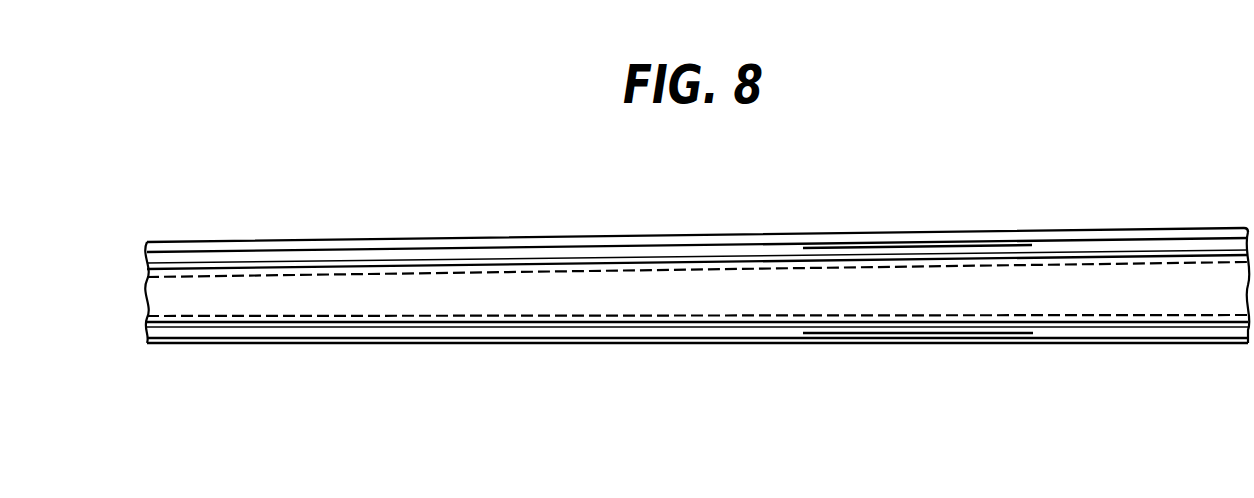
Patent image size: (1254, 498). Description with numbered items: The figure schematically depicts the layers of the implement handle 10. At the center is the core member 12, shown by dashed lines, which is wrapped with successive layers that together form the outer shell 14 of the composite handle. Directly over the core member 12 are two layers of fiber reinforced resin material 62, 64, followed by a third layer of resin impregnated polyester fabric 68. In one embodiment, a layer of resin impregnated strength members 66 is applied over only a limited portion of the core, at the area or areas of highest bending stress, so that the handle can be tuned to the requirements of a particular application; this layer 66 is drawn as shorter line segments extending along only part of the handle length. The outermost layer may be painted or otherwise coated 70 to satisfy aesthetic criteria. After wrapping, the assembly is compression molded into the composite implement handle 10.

The implement handle 10 is at (1170, 229).
The core member 12 is at (933, 285).
The outer shell 14 is at (797, 322).
The layer of fiber reinforced resin material 62 is at (543, 267).
The layer of fiber reinforced resin material 64 is at (603, 263).
The layer of resin impregnated strength members 66 is at (865, 245).
The layer of resin impregnated polyester fabric 68 is at (703, 241).
The coating 70 is at (292, 242).